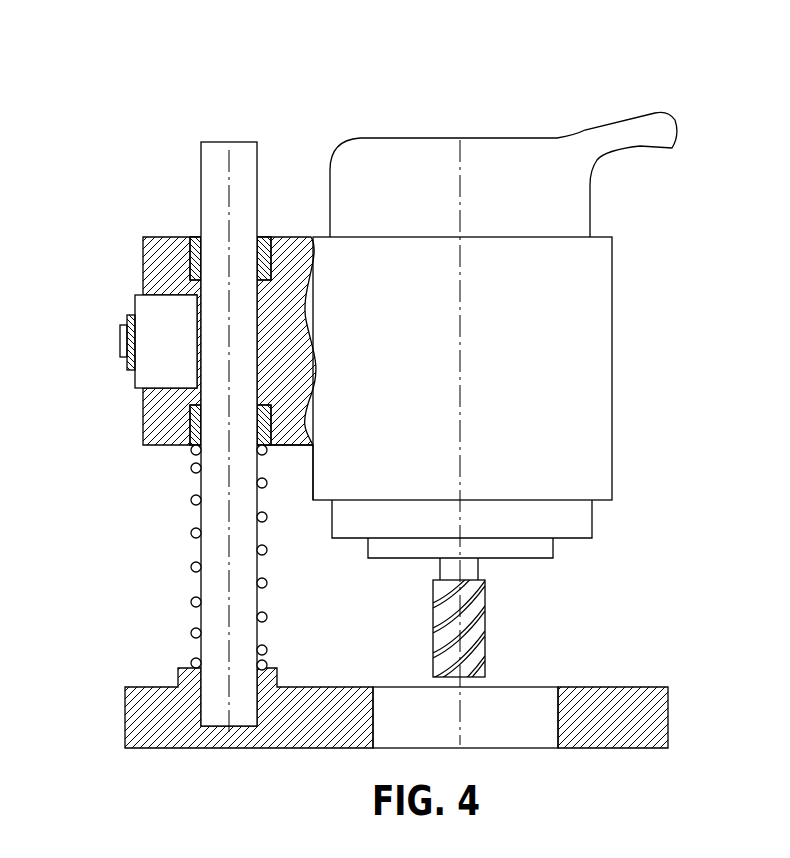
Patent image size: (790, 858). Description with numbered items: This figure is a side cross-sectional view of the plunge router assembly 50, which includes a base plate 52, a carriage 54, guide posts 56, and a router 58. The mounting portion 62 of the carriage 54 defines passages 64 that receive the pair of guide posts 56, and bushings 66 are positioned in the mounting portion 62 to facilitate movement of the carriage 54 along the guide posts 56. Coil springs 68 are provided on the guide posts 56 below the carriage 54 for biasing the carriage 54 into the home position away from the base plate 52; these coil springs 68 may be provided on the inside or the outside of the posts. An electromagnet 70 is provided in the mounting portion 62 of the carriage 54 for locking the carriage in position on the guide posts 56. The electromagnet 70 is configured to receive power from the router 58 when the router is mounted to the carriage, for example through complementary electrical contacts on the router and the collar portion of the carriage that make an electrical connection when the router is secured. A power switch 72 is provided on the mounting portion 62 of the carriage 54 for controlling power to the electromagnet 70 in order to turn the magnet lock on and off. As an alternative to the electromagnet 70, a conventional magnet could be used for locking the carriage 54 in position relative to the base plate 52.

The plunge router assembly 50 is at (658, 225).
The base plate 52 is at (297, 748).
The carriage 54 is at (630, 357).
The guide posts 56 is at (193, 582).
The router 58 is at (482, 138).
The mounting portion 62 is at (142, 422).
The passages 64 is at (203, 247).
The bushings 66 is at (265, 237).
The coil springs 68 is at (267, 583).
The electromagnet 70 is at (135, 382).
The power switch 72 is at (125, 337).